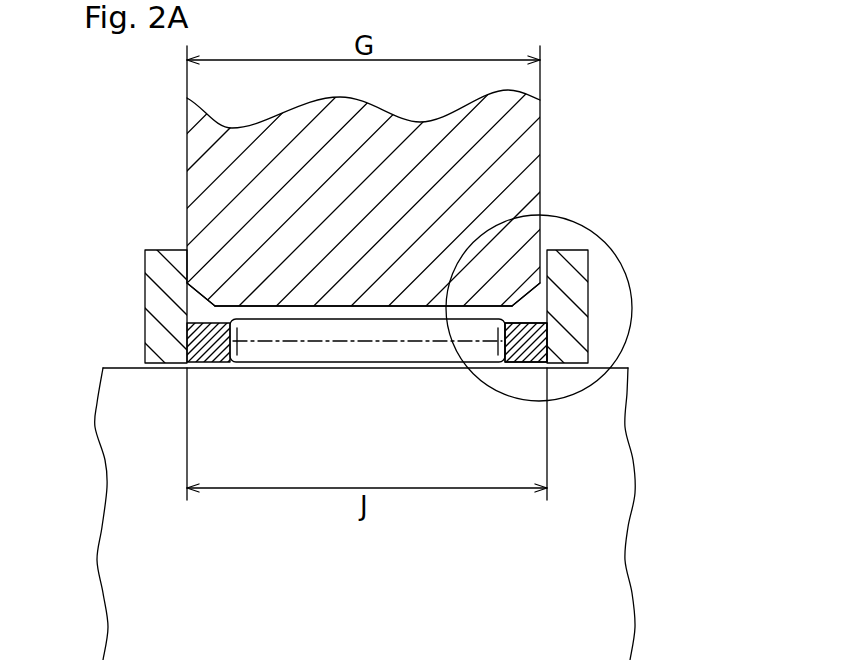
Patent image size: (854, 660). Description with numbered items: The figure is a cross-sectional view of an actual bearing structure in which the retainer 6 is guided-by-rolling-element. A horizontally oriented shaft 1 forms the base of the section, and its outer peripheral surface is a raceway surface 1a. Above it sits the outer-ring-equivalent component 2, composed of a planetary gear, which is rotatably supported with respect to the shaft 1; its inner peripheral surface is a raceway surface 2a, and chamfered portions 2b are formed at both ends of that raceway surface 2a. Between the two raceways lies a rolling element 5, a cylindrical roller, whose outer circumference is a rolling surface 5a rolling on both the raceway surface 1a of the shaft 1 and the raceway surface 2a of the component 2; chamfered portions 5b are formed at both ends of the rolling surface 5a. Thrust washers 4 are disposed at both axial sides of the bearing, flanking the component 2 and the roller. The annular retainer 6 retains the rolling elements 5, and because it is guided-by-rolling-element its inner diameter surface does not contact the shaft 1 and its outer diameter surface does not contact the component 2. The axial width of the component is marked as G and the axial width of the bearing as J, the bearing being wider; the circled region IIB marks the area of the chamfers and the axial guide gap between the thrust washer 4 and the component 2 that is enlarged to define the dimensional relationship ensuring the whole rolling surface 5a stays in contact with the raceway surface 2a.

The shaft 1 is at (120, 368).
The raceway surface 1a is at (318, 370).
The outer-ring-equivalent component 2 is at (200, 140).
The raceway surface 2a is at (253, 311).
The chamfered portions 2b is at (190, 297).
The thrust washers 4 is at (165, 250).
The rolling elements 5 is at (387, 350).
The rolling surface 5a is at (348, 368).
The chamfered portions 5b is at (228, 365).
The retainer 6 is at (547, 342).
The detail region IIB is at (632, 305).